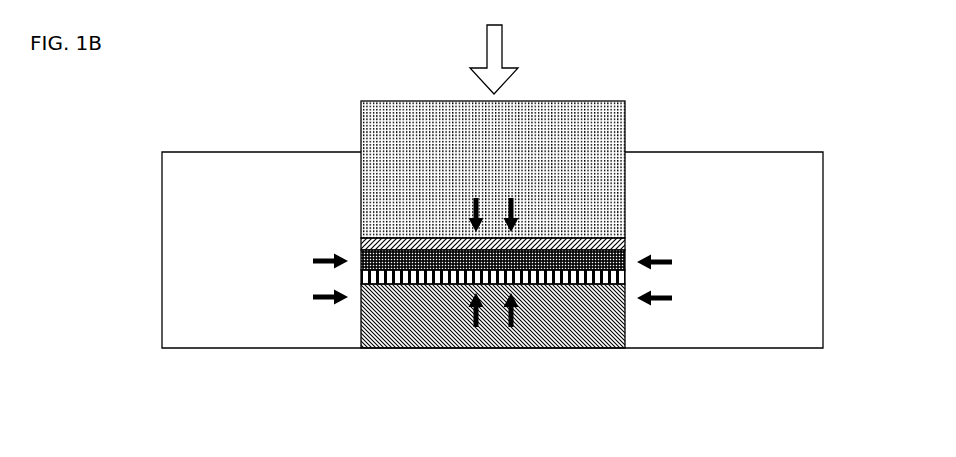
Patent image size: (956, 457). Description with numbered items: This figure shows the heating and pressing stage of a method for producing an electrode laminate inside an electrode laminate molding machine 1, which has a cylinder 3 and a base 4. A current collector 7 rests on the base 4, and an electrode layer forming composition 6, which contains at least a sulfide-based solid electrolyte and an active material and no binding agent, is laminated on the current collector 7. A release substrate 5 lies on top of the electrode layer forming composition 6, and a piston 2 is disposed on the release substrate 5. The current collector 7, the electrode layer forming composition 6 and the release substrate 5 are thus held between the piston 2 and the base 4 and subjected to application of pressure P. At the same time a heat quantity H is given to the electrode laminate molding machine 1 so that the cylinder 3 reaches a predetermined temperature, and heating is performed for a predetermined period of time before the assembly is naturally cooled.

The electrode laminate molding machine 1 is at (467, 222).
The piston 2 is at (375, 118).
The cylinder 3 is at (197, 283).
The base 4 is at (421, 318).
The release substrate 5 is at (607, 238).
The electrode layer forming composition 6 is at (570, 258).
The current collector 7 is at (542, 277).